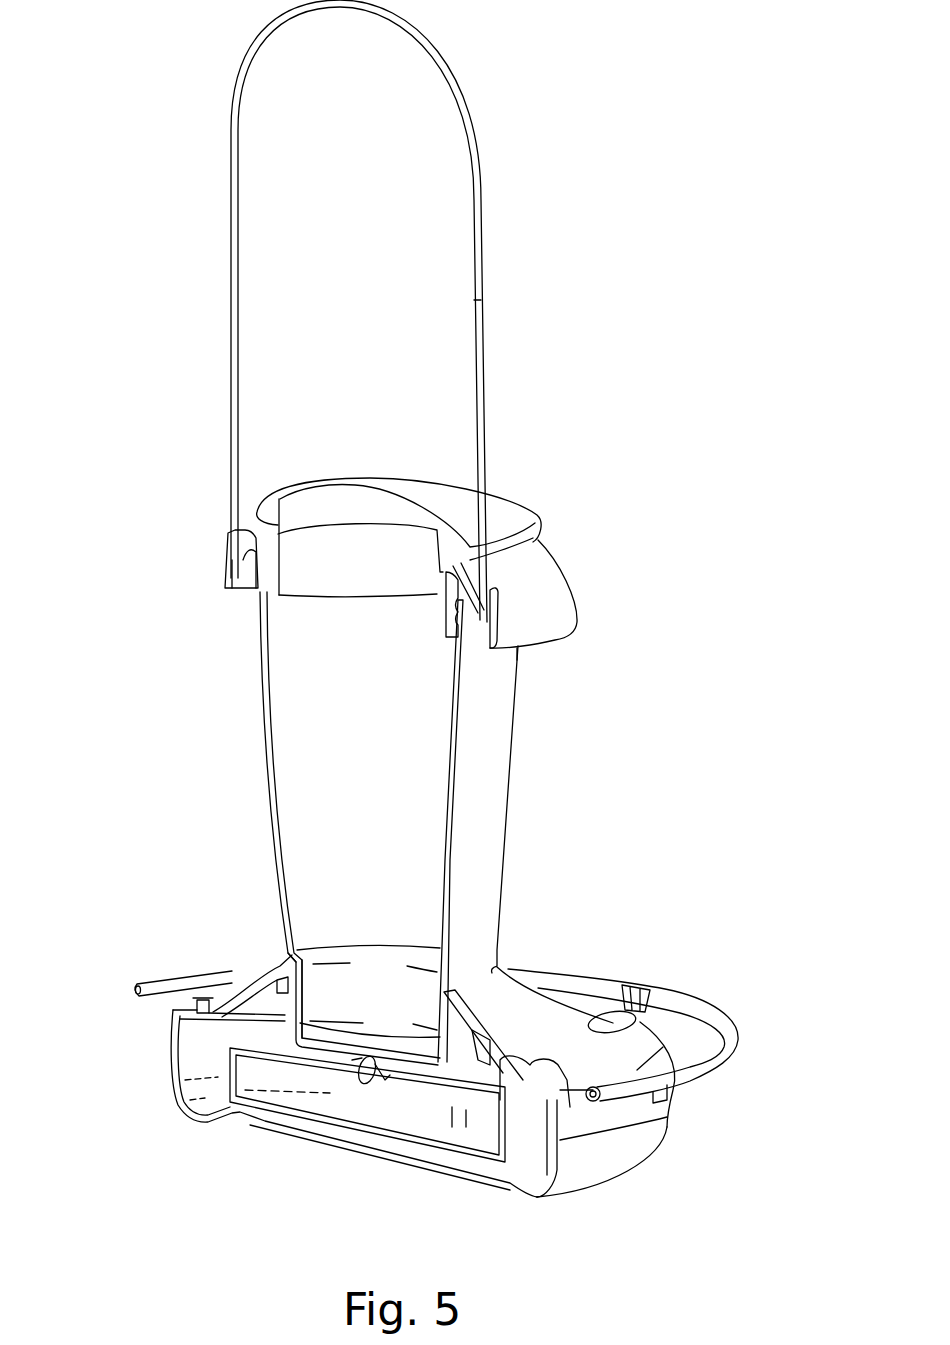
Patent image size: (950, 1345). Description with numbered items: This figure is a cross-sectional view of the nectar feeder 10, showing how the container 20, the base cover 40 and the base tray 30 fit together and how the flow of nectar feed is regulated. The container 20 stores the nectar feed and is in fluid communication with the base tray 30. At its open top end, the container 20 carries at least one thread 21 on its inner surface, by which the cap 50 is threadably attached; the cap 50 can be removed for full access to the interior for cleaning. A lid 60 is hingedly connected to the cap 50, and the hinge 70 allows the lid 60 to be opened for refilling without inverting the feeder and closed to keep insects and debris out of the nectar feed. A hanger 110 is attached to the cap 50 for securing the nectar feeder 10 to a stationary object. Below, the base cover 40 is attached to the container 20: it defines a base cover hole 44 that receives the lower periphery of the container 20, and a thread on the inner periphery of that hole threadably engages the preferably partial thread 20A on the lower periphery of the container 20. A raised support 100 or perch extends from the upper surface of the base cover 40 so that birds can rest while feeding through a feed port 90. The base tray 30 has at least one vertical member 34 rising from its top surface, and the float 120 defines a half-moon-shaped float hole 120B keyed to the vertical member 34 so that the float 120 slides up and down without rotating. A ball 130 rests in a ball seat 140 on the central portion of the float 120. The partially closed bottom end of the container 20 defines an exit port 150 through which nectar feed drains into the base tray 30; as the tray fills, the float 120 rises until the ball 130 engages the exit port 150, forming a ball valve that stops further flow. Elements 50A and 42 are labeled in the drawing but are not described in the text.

The nectar feeder 10 is at (653, 88).
The hanger 110 is at (484, 266).
The hinge 70 is at (495, 452).
The cap clip 50A is at (262, 575).
The lid 60 is at (530, 507).
The cap 50 is at (568, 587).
The thread 21 is at (445, 623).
The container 20 is at (519, 737).
The thread 20A is at (460, 1048).
The base cover hole 44 is at (300, 977).
The vertical member 34 is at (480, 1077).
The ball seat 140 is at (367, 1057).
The exit port 150 is at (318, 1030).
The base cover 40 is at (665, 1042).
The feed port 90 is at (640, 1000).
The support 100 is at (743, 1038).
The ring support 42 is at (717, 1075).
The base tray 30 is at (555, 1178).
The ball 130 is at (200, 1097).
The float 120 is at (525, 1083).
The float hole 120B is at (507, 1073).